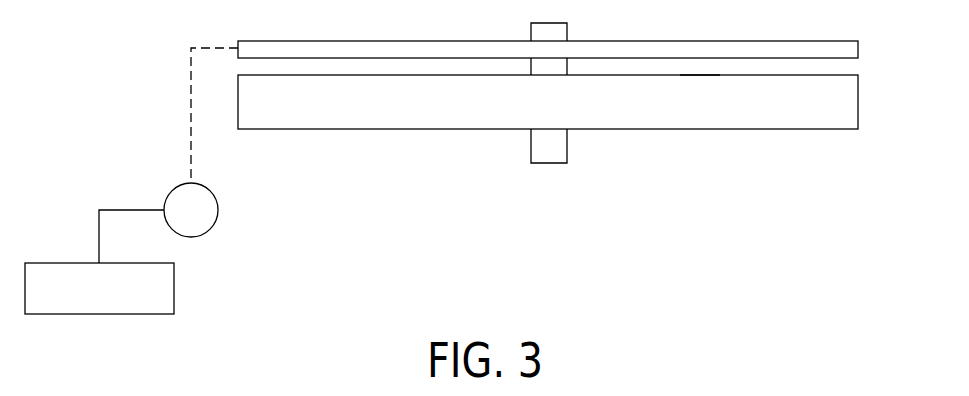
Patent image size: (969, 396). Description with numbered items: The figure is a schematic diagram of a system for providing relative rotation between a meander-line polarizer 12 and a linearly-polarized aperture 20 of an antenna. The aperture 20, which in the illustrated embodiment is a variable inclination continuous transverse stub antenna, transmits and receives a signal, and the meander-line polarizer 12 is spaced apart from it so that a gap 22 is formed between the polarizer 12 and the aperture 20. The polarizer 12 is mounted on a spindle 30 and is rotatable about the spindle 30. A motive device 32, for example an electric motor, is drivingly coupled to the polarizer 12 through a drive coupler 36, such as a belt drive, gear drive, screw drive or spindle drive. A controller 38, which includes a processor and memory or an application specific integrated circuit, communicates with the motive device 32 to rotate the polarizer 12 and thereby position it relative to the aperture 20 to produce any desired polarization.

The meander-line polarizer 12 is at (858, 46).
The linearly-polarized aperture 20 is at (858, 100).
The gap 22 is at (695, 67).
The spindle 30 is at (531, 145).
The motive device 32 is at (218, 208).
The drive coupler 36 is at (191, 70).
The controller 38 is at (174, 285).